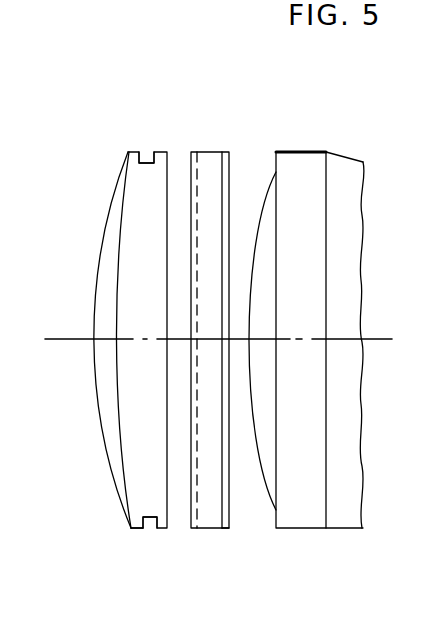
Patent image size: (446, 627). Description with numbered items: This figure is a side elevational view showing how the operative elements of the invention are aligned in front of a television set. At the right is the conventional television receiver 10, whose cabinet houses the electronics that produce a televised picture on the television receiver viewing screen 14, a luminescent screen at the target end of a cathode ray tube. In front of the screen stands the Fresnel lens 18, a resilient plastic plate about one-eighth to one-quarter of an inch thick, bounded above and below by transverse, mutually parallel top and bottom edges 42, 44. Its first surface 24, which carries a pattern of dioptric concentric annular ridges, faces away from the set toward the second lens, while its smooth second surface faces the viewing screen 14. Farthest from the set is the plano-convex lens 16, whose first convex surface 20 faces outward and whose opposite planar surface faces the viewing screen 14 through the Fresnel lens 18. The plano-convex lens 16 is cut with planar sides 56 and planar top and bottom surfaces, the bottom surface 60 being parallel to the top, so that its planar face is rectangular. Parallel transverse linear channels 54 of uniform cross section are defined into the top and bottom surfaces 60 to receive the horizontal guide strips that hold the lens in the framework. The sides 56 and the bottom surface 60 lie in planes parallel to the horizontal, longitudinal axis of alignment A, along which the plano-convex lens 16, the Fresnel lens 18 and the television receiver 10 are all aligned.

The television receiver 10 is at (343, 155).
The television receiver viewing screen 14 is at (268, 223).
The plano-convex lens 16 is at (113, 178).
The Fresnel lens 18 is at (197, 151).
The first convex surface 20 is at (108, 290).
The first surface 24 is at (213, 507).
The top edge 42 is at (214, 152).
The bottom edge 44 is at (218, 530).
The channels 54 is at (147, 163).
The sides 56 is at (140, 355).
The bottom surface 60 is at (137, 530).
The axis of alignment A is at (372, 337).